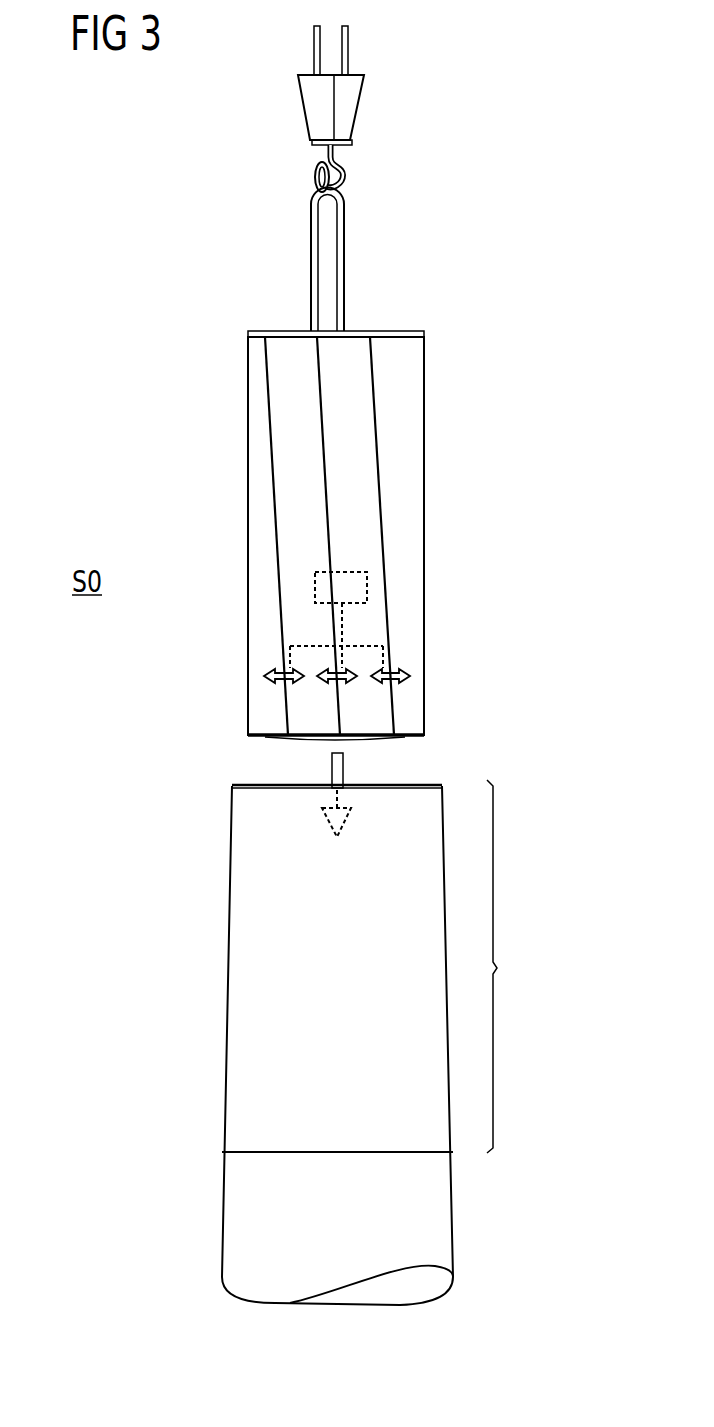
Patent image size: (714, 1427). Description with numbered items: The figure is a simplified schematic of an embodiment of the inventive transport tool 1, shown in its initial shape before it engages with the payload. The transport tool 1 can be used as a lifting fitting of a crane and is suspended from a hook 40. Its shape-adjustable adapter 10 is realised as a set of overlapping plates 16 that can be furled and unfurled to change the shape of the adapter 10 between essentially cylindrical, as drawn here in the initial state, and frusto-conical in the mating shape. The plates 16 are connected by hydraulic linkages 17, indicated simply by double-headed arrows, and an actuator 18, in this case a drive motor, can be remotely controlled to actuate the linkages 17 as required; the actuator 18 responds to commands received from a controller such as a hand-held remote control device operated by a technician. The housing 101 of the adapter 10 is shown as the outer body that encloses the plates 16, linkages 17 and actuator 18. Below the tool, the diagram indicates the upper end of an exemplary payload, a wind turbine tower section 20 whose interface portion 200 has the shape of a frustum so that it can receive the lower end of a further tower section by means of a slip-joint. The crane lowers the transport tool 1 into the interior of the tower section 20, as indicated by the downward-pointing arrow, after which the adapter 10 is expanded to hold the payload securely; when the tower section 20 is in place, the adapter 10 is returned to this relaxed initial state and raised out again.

The transport tool 1 is at (520, 418).
The shape-adjustable adapter 10 is at (476, 523).
The housing 101 is at (432, 598).
The overlapping plates 16 is at (290, 350).
The hydraulic linkages 17 is at (337, 684).
The actuator 18 is at (341, 572).
The hook 40 is at (341, 162).
The wind turbine tower section 20 is at (492, 1197).
The interface portion 200 is at (519, 966).